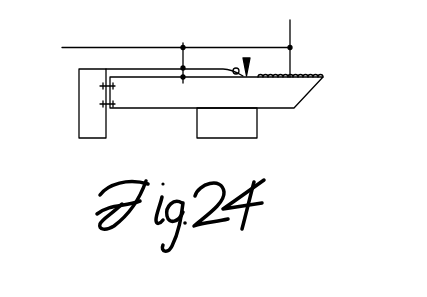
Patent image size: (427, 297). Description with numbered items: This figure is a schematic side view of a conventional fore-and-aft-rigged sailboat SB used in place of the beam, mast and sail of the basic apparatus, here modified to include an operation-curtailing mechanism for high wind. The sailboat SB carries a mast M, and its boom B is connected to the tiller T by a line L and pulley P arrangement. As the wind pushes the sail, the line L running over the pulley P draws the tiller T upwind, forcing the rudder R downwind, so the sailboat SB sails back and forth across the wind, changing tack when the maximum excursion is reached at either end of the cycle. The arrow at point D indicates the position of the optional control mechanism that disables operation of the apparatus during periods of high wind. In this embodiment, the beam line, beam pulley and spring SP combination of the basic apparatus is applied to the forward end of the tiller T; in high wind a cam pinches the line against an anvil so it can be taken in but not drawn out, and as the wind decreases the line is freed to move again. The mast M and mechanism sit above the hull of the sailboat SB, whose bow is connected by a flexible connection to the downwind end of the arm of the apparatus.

The tiller T is at (118, 69).
The boom B is at (129, 47).
The line L is at (184, 46).
The pulley P is at (234, 68).
The point D is at (247, 60).
The mast M is at (291, 33).
The spring SP is at (305, 74).
The sailboat SB is at (311, 90).
The rudder R is at (79, 95).